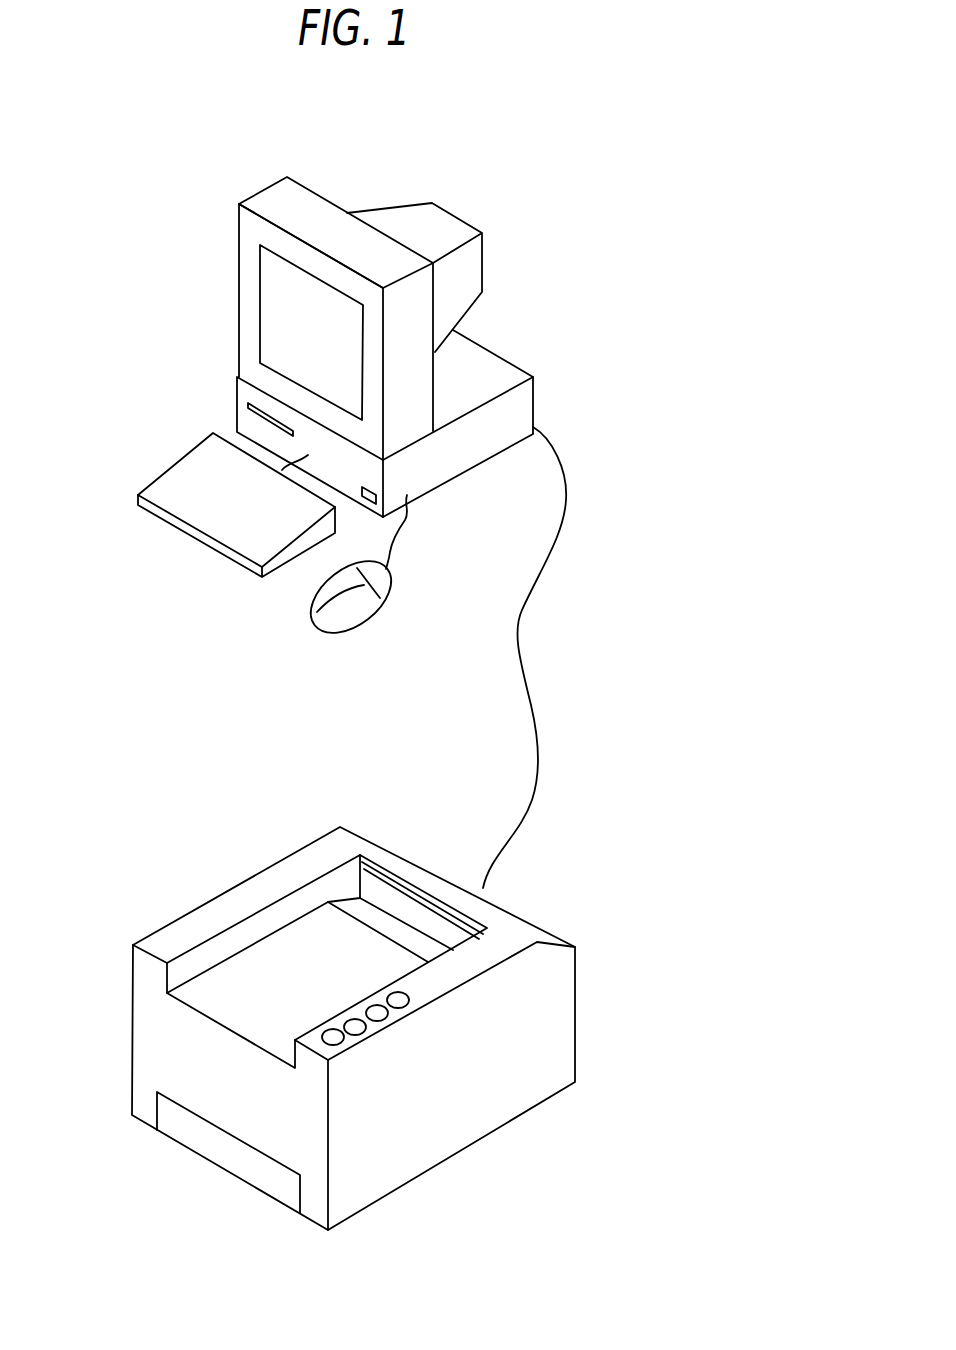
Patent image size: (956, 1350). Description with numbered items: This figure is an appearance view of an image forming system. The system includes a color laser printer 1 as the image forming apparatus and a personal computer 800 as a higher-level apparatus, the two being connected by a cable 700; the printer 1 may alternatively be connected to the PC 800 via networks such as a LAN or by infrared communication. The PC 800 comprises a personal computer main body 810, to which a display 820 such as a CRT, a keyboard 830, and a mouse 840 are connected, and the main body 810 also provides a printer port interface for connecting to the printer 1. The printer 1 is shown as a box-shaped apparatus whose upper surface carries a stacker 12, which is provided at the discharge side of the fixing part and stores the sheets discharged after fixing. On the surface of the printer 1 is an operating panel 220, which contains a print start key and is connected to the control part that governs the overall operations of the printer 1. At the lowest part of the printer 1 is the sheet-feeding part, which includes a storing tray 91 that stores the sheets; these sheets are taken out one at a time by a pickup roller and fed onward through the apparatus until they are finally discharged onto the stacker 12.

The personal computer 800 is at (570, 215).
The personal computer main body 810 is at (521, 407).
The display 820 is at (248, 265).
The keyboard 830 is at (198, 535).
The mouse 840 is at (332, 630).
The cable 700 is at (520, 635).
The color laser printer 1 is at (568, 872).
The stacker 12 is at (383, 920).
The operating panel 220 is at (392, 1038).
The storing tray 91 is at (173, 1117).